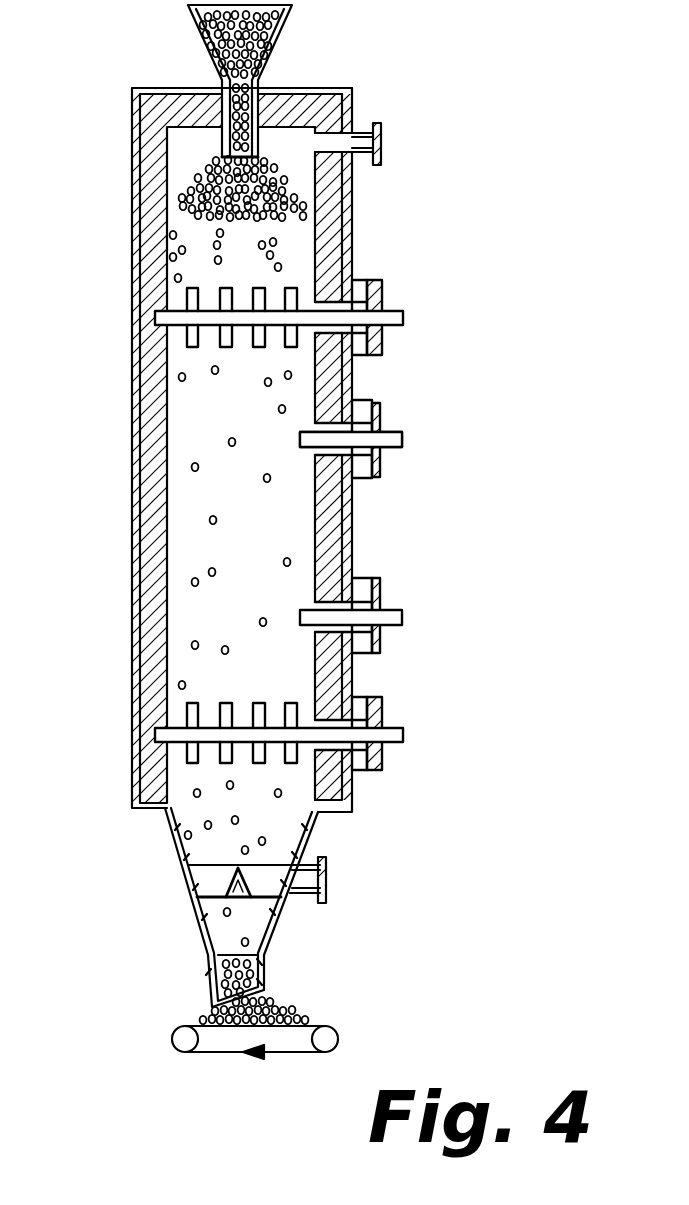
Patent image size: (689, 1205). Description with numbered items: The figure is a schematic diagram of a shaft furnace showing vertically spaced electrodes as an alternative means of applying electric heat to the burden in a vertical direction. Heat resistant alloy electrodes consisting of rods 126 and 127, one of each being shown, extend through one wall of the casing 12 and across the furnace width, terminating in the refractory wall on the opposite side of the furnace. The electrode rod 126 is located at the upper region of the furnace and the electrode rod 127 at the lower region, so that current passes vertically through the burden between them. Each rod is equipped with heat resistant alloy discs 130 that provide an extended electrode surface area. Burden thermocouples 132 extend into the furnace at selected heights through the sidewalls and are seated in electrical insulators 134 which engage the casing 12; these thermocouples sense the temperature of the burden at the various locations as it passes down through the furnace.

The casing 12 is at (353, 191).
The electrode rod 126 is at (226, 340).
The electrode rod 127 is at (207, 722).
The heat resistant alloy discs 130 is at (283, 352).
The burden thermocouples 132 is at (404, 437).
The electrical insulators 134 is at (380, 468).